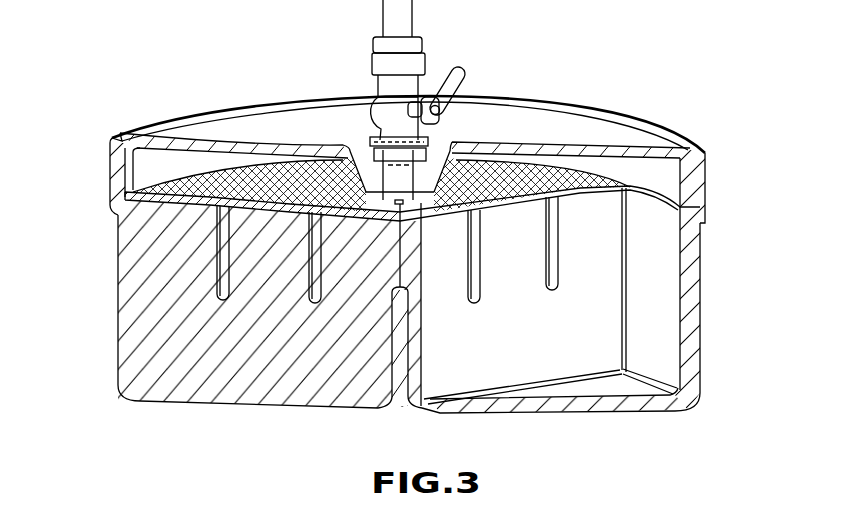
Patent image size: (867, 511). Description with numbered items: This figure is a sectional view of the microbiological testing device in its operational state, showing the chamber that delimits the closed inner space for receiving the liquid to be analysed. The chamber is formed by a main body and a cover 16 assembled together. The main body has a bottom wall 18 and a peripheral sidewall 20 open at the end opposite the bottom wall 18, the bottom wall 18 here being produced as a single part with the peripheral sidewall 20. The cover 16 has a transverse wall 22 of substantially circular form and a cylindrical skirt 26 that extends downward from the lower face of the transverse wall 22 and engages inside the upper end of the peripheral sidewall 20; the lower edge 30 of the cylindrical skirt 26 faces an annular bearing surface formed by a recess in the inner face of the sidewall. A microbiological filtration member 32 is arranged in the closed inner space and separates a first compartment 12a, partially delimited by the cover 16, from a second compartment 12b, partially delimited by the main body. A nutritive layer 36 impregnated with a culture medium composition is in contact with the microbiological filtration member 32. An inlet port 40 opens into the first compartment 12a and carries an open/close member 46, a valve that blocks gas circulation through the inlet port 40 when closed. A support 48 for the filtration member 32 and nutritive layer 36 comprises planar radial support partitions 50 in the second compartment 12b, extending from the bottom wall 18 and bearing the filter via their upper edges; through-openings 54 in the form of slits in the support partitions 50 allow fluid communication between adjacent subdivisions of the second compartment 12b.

The first compartment 12a is at (155, 165).
The second compartment 12b is at (642, 334).
The cover 16 is at (636, 113).
The bottom wall 18 is at (577, 411).
The peripheral sidewall 20 is at (690, 294).
The transverse wall 22 is at (529, 153).
The cylindrical skirt 26 is at (683, 182).
The lower edge 30 is at (687, 205).
The microbiological filtration member 32 is at (150, 188).
The nutritive layer 36 is at (118, 214).
The inlet port 40 is at (356, 41).
The open/close member 46 is at (428, 80).
The support 48 is at (256, 384).
The support partitions 50 is at (153, 346).
The through-openings 54 is at (313, 277).